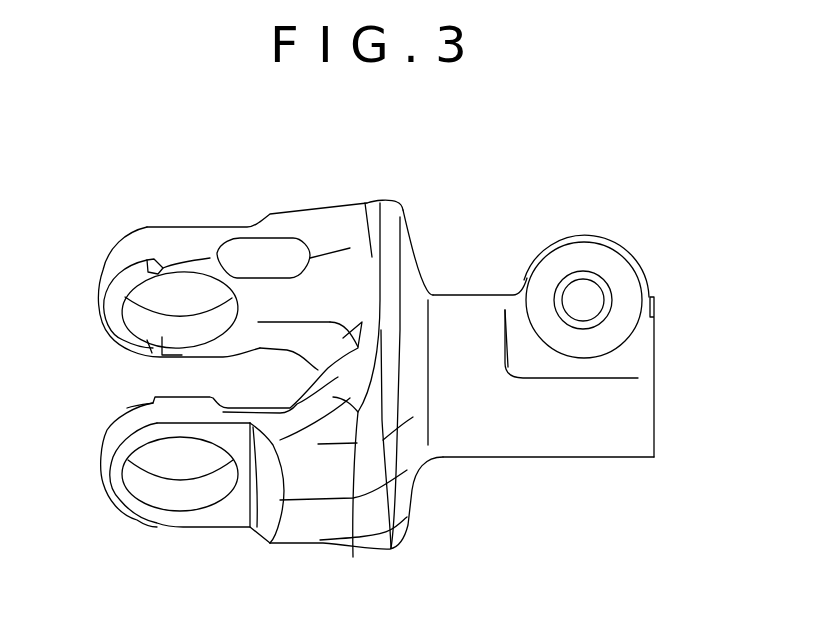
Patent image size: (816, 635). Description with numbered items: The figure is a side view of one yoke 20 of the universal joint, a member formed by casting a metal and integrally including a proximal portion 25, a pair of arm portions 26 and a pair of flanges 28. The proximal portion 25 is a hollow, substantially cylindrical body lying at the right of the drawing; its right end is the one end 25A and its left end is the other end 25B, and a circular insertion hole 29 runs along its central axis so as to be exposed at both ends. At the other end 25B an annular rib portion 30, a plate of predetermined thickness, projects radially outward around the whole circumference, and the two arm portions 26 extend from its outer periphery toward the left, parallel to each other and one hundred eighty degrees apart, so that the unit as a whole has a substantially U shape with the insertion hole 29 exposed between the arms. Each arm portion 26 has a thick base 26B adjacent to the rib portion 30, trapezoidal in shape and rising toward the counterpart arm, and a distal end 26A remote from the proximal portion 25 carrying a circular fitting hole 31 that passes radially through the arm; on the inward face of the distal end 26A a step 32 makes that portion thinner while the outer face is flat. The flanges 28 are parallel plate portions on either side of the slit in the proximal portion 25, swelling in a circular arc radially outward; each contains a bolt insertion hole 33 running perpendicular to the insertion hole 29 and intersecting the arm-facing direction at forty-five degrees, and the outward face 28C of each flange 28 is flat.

The yoke 20 is at (223, 212).
The proximal portion 25 is at (537, 440).
The one end 25A is at (655, 415).
The other end 25B is at (435, 428).
The arm portion 26 is at (150, 243).
The distal end 26A is at (110, 290).
The base 26B is at (362, 217).
The flange 28 is at (620, 270).
The face 28C is at (627, 327).
The insertion hole 29 is at (666, 384).
The rib portion 30 is at (415, 300).
The fitting hole 31 is at (186, 306).
The step 32 is at (113, 317).
The bolt insertion hole 33 is at (588, 289).